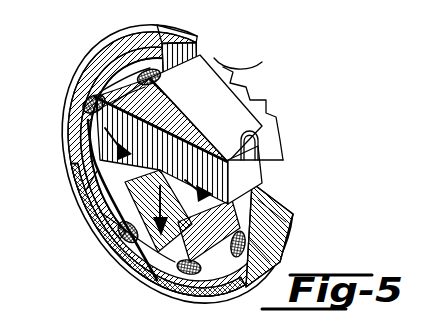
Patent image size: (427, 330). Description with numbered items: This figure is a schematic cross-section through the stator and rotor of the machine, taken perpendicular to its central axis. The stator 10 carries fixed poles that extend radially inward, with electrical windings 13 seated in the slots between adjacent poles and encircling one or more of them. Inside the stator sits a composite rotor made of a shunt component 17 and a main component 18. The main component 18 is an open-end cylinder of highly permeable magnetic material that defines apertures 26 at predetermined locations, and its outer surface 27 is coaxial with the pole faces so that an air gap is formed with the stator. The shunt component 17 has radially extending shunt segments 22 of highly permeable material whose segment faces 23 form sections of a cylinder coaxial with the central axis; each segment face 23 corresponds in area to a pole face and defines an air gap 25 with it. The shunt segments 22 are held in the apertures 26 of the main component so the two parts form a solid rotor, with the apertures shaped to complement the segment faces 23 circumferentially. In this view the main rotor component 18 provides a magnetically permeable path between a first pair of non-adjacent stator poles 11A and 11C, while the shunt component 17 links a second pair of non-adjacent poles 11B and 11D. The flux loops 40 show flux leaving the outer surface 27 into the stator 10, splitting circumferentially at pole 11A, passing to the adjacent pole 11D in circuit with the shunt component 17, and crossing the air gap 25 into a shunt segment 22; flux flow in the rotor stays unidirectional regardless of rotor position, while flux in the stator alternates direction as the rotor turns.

The stator 10 is at (84, 239).
The stator pole 11A is at (214, 58).
The stator pole 11B is at (287, 231).
The stator pole 11C is at (157, 274).
The stator pole 11D is at (72, 116).
The electrical windings 13 is at (172, 31).
The shunt component 17 is at (270, 156).
The main component 18 is at (246, 92).
The shunt segments 22 is at (86, 190).
The segment faces 23 is at (254, 199).
The air gap 25 is at (100, 212).
The apertures 26 is at (268, 108).
The outer surface 27 is at (227, 123).
The flux loops 40 is at (262, 58).